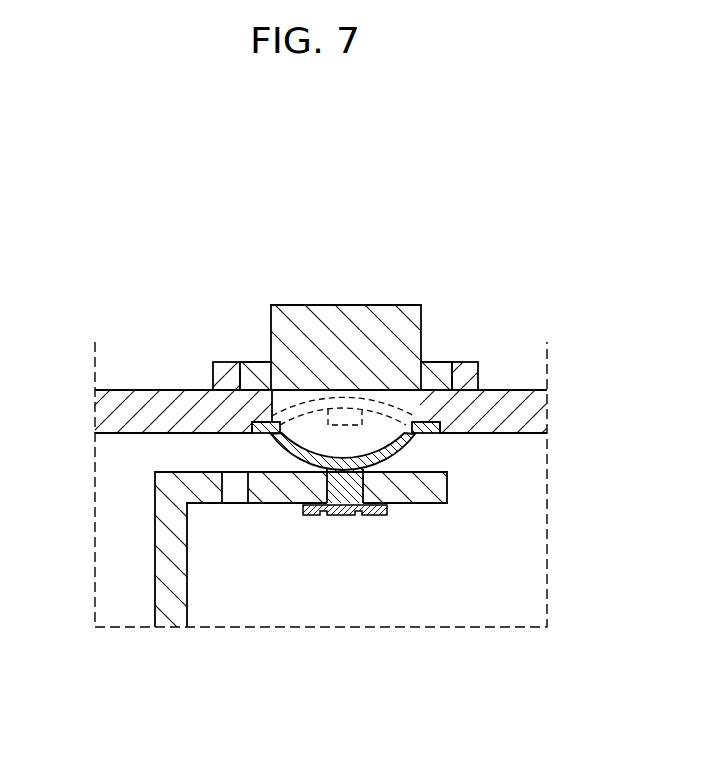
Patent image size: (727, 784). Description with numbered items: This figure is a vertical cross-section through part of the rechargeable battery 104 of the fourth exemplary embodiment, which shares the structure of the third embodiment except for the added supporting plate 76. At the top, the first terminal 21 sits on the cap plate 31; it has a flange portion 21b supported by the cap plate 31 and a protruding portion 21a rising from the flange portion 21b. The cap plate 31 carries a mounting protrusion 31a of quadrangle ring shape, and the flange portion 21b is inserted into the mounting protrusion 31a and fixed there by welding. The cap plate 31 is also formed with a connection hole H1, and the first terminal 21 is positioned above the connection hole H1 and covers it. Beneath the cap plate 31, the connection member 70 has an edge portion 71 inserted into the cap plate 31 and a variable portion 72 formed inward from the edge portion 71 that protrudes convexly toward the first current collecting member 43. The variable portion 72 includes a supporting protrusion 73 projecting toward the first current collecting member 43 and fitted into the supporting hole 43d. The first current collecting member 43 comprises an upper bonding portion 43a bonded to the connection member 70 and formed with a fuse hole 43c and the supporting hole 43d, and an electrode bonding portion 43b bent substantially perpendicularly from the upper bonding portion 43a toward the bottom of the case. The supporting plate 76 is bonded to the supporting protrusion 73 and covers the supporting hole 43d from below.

The rechargeable battery 104 is at (332, 141).
The first terminal 21 is at (355, 291).
The protruding portion 21a is at (270, 333).
The flange portion 21b is at (252, 362).
The cap plate 31 is at (510, 410).
The mounting protrusion 31a is at (465, 372).
The connection member 70 is at (342, 443).
The edge portion 71 is at (403, 440).
The variable portion 72 is at (403, 442).
The supporting protrusion 73 is at (348, 516).
The supporting plate 76 is at (313, 516).
The first current collecting member 43 is at (140, 516).
The upper bonding portion 43a is at (435, 490).
The electrode bonding portion 43b is at (165, 575).
The fuse hole 43c is at (234, 493).
The supporting hole 43d is at (336, 516).
The connection hole H1 is at (405, 404).